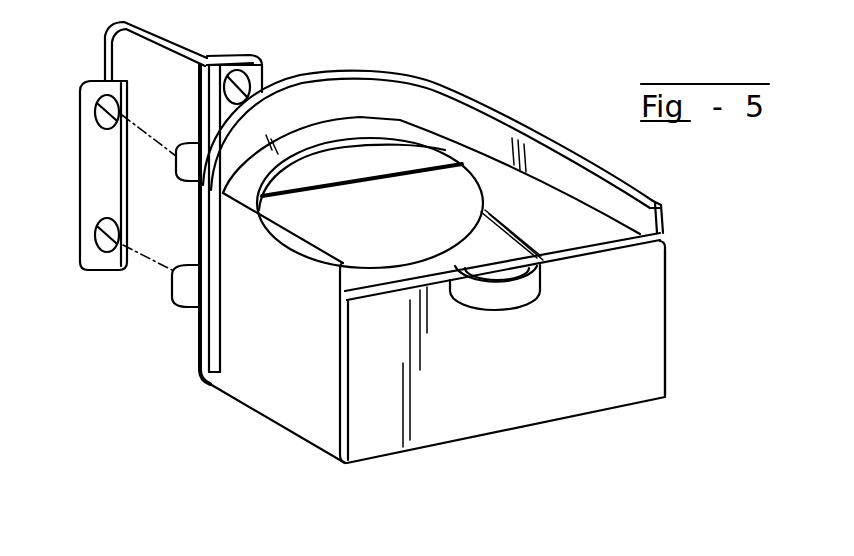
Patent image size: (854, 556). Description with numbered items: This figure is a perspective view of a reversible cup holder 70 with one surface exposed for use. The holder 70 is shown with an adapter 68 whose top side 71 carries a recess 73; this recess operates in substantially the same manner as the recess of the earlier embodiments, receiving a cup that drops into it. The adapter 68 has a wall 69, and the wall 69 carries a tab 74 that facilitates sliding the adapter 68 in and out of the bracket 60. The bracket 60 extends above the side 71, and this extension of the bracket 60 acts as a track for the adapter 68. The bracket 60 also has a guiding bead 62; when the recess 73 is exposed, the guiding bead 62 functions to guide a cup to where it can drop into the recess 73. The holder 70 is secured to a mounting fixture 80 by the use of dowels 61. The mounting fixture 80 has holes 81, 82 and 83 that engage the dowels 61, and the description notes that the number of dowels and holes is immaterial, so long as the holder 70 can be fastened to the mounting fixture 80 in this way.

The bracket 60 is at (228, 350).
The dowels 61 is at (200, 187).
The guiding bead 62 is at (658, 204).
The adapter 68 is at (456, 449).
The wall 69 is at (597, 390).
The holder 70 is at (671, 318).
The top side 71 is at (507, 190).
The recess 73 is at (367, 157).
The tab 74 is at (505, 303).
The mounting fixture 80 is at (113, 146).
The hole 81 is at (90, 88).
The hole 82 is at (100, 246).
The hole 83 is at (262, 82).